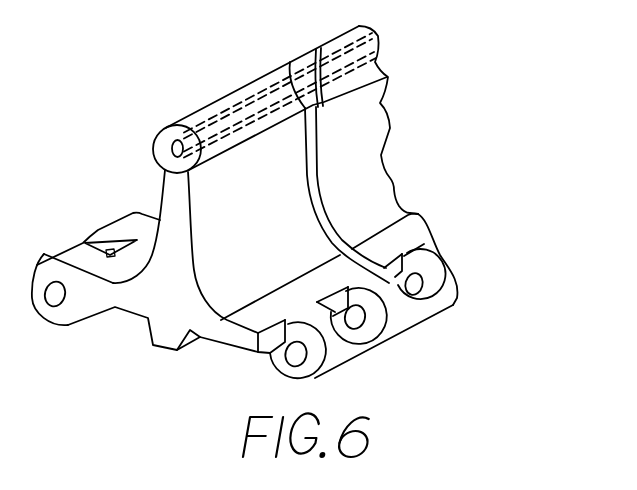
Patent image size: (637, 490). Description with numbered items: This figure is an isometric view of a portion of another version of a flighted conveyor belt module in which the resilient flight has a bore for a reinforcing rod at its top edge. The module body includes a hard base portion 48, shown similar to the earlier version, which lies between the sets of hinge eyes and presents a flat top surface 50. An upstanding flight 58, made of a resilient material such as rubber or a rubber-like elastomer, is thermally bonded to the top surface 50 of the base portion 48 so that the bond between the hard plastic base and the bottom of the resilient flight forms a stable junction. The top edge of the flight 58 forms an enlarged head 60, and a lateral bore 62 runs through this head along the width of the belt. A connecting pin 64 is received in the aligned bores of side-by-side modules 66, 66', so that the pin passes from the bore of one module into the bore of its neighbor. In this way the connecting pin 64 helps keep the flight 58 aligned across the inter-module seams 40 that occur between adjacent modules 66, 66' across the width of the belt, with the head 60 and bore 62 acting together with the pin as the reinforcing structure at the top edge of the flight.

The inter-module seam 40 is at (323, 125).
The base portion 48 is at (162, 316).
The top surface 50 is at (254, 316).
The upstanding flight 58 is at (367, 161).
The enlarged head 60 is at (165, 135).
The lateral bore 62 is at (172, 151).
The connecting pin 64 is at (253, 98).
The module 66 is at (396, 307).
The module 66' is at (469, 253).